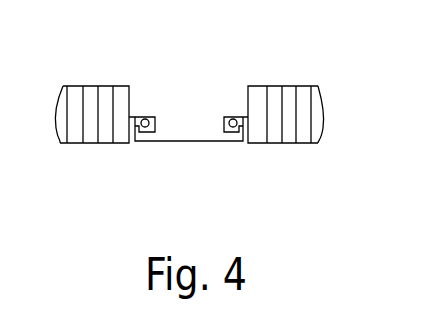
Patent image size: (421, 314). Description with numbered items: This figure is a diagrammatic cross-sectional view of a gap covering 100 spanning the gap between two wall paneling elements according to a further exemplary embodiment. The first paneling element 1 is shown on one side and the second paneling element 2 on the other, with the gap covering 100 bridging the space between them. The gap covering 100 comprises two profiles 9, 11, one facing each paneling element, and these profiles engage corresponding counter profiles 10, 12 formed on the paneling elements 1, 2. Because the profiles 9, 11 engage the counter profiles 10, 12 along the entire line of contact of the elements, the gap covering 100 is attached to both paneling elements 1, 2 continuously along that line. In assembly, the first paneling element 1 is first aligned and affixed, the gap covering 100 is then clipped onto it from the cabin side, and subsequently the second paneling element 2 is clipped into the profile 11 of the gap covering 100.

The first paneling element 1 is at (75, 94).
The second paneling element 2 is at (305, 100).
The profile 9 is at (135, 143).
The counter profile 10 is at (148, 116).
The profile 11 is at (245, 143).
The counter profile 12 is at (229, 116).
The gap covering 100 is at (206, 157).